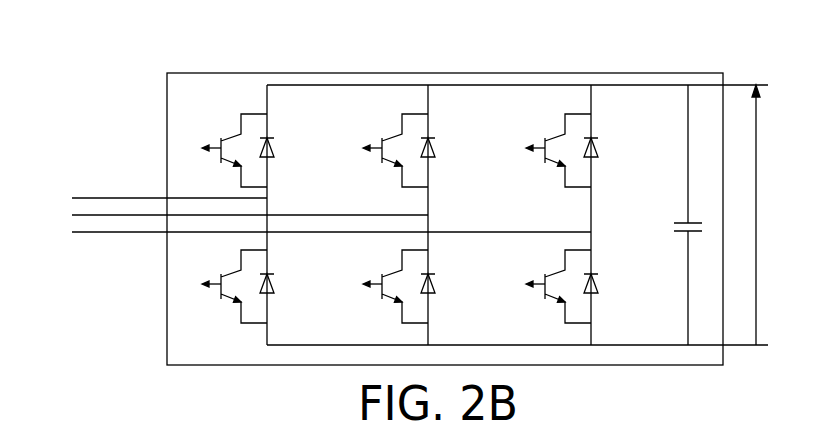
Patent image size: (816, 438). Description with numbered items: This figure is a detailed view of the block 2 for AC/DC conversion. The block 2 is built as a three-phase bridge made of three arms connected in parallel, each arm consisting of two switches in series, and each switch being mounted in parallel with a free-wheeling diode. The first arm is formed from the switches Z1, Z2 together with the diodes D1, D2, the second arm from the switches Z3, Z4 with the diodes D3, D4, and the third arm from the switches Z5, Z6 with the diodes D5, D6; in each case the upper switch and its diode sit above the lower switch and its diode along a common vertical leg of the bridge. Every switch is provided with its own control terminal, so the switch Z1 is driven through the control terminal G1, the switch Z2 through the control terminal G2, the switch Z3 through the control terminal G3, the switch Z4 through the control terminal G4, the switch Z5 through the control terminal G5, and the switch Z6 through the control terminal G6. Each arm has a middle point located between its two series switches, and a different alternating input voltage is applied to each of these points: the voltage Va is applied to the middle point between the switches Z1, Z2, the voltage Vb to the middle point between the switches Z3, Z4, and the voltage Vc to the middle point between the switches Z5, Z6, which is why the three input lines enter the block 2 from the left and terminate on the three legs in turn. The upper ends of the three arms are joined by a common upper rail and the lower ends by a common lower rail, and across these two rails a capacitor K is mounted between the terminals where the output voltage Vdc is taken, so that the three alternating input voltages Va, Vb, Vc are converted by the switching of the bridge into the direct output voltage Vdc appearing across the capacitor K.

The block for AC/DC conversion 2 is at (193, 87).
The alternating input voltage Va is at (88, 198).
The alternating input voltage Vb is at (72, 215).
The alternating input voltage Vc is at (73, 234).
The switch Z1 is at (243, 133).
The switch Z2 is at (236, 270).
The switch Z3 is at (399, 135).
The switch Z4 is at (399, 270).
The switch Z5 is at (561, 135).
The switch Z6 is at (561, 271).
The control terminal G1 is at (196, 151).
The control terminal G2 is at (196, 287).
The control terminal G3 is at (358, 151).
The control terminal G4 is at (358, 287).
The control terminal G5 is at (520, 151).
The control terminal G6 is at (519, 287).
The free-wheeling diode D1 is at (275, 150).
The free-wheeling diode D2 is at (275, 286).
The free-wheeling diode D3 is at (436, 150).
The free-wheeling diode D4 is at (436, 286).
The free-wheeling diode D5 is at (599, 150).
The free-wheeling diode D6 is at (599, 286).
The capacitor K is at (685, 221).
The output voltage Vdc is at (773, 215).